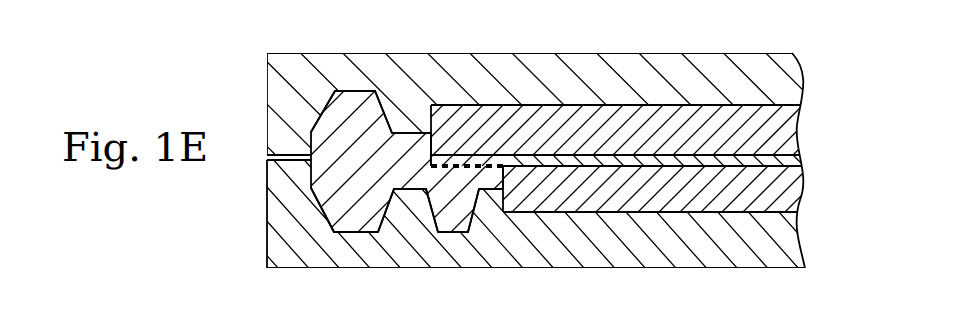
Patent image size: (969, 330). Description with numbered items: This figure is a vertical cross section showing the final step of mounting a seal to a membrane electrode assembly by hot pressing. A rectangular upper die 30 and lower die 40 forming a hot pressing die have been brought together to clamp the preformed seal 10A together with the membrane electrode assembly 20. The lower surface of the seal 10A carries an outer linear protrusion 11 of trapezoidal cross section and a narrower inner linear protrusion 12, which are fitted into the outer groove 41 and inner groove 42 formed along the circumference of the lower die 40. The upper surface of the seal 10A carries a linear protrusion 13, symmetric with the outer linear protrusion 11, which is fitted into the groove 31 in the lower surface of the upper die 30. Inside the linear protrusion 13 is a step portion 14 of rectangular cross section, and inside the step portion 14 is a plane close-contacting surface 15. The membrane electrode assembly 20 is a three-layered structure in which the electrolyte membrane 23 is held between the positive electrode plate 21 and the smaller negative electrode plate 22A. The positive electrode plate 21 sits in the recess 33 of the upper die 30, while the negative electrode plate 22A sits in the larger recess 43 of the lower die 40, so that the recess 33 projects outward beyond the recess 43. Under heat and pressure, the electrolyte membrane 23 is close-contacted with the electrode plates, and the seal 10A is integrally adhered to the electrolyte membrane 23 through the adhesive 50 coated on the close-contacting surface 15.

The seal 10A is at (328, 100).
The outer linear protrusion 11 is at (347, 232).
The inner linear protrusion 12 is at (445, 235).
The linear protrusion 13 is at (362, 88).
The step portion 14 is at (414, 133).
The close-contacting surface 15 is at (460, 164).
The membrane electrode assembly 20 is at (752, 103).
The positive electrode plate 21 is at (667, 105).
The negative electrode plate 22A is at (783, 202).
The electrolyte membrane 23 is at (750, 153).
The upper die 30 is at (500, 52).
The groove 31 is at (331, 91).
The recess 33 is at (588, 110).
The lower die 40 is at (767, 253).
The outer groove 41 is at (375, 222).
The inner groove 42 is at (463, 222).
The recess 43 is at (735, 212).
The adhesive 50 is at (481, 165).